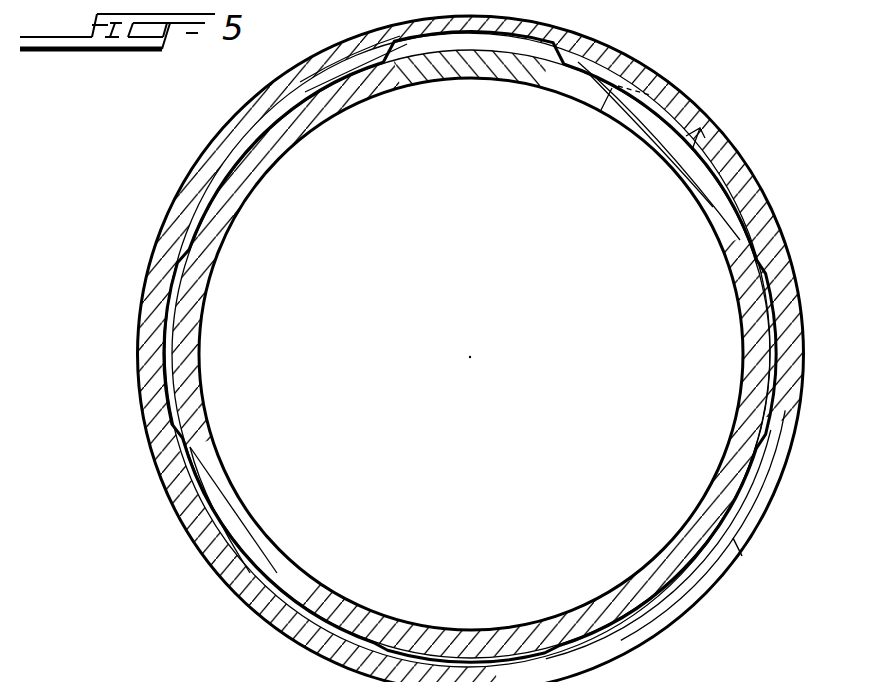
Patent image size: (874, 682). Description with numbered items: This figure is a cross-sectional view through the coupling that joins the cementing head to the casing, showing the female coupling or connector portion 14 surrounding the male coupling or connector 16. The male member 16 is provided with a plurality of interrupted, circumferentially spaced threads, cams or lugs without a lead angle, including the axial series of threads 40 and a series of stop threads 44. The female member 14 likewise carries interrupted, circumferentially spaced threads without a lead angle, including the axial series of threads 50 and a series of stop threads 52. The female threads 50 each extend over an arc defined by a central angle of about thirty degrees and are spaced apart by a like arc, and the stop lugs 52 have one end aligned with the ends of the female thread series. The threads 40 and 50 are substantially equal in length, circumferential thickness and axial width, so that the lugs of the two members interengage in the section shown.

The female coupling or connector portion 14 is at (795, 244).
The male coupling or connector 16 is at (738, 262).
The axial series of threads 40 is at (742, 538).
The series of stop threads 44 is at (736, 548).
The axial series of threads 50 is at (699, 136).
The stop threads 52 is at (607, 96).